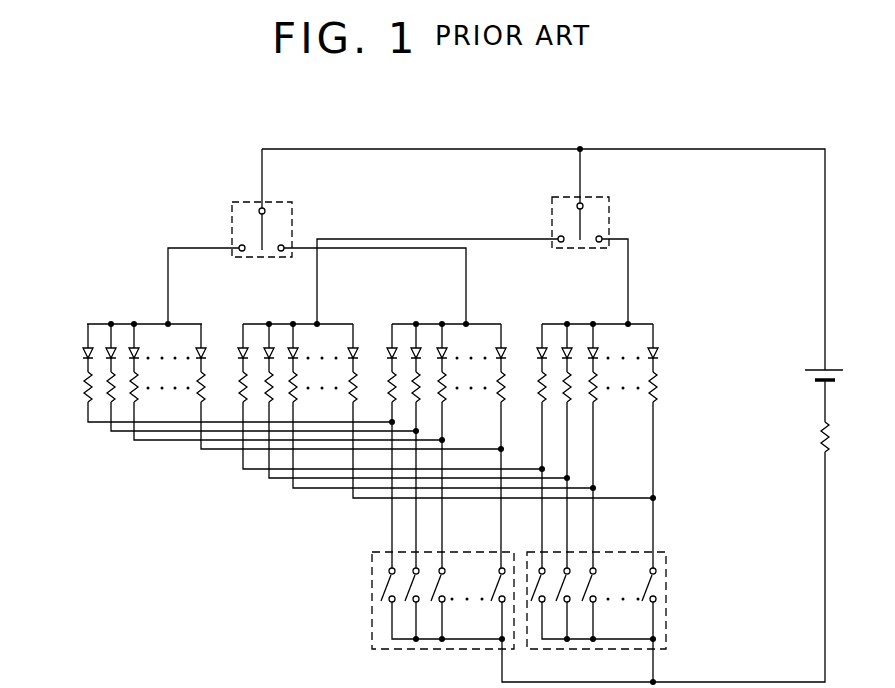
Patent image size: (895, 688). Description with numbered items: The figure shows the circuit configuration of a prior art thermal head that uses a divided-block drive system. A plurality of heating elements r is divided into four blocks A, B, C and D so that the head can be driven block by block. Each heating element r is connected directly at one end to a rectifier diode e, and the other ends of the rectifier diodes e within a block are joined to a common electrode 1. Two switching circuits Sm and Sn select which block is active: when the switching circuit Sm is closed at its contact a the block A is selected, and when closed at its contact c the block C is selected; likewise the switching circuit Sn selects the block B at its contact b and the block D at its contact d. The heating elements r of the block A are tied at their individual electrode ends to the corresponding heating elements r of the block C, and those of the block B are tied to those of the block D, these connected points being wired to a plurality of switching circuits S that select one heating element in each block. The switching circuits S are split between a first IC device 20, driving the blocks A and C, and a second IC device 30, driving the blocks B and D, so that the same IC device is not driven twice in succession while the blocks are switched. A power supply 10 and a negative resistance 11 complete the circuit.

The common electrode 1 is at (371, 413).
The power supply 10 is at (843, 370).
The negative resistance 11 is at (832, 436).
The first IC device 20 is at (372, 622).
The second IC device 30 is at (666, 628).
The switching circuit Sm is at (276, 218).
The switching circuit Sn is at (590, 209).
The switching circuits S is at (383, 577).
The rectifier diodes e is at (84, 353).
The heating elements r is at (84, 395).
The block A is at (130, 316).
The block B is at (299, 317).
The block C is at (484, 317).
The block D is at (639, 315).